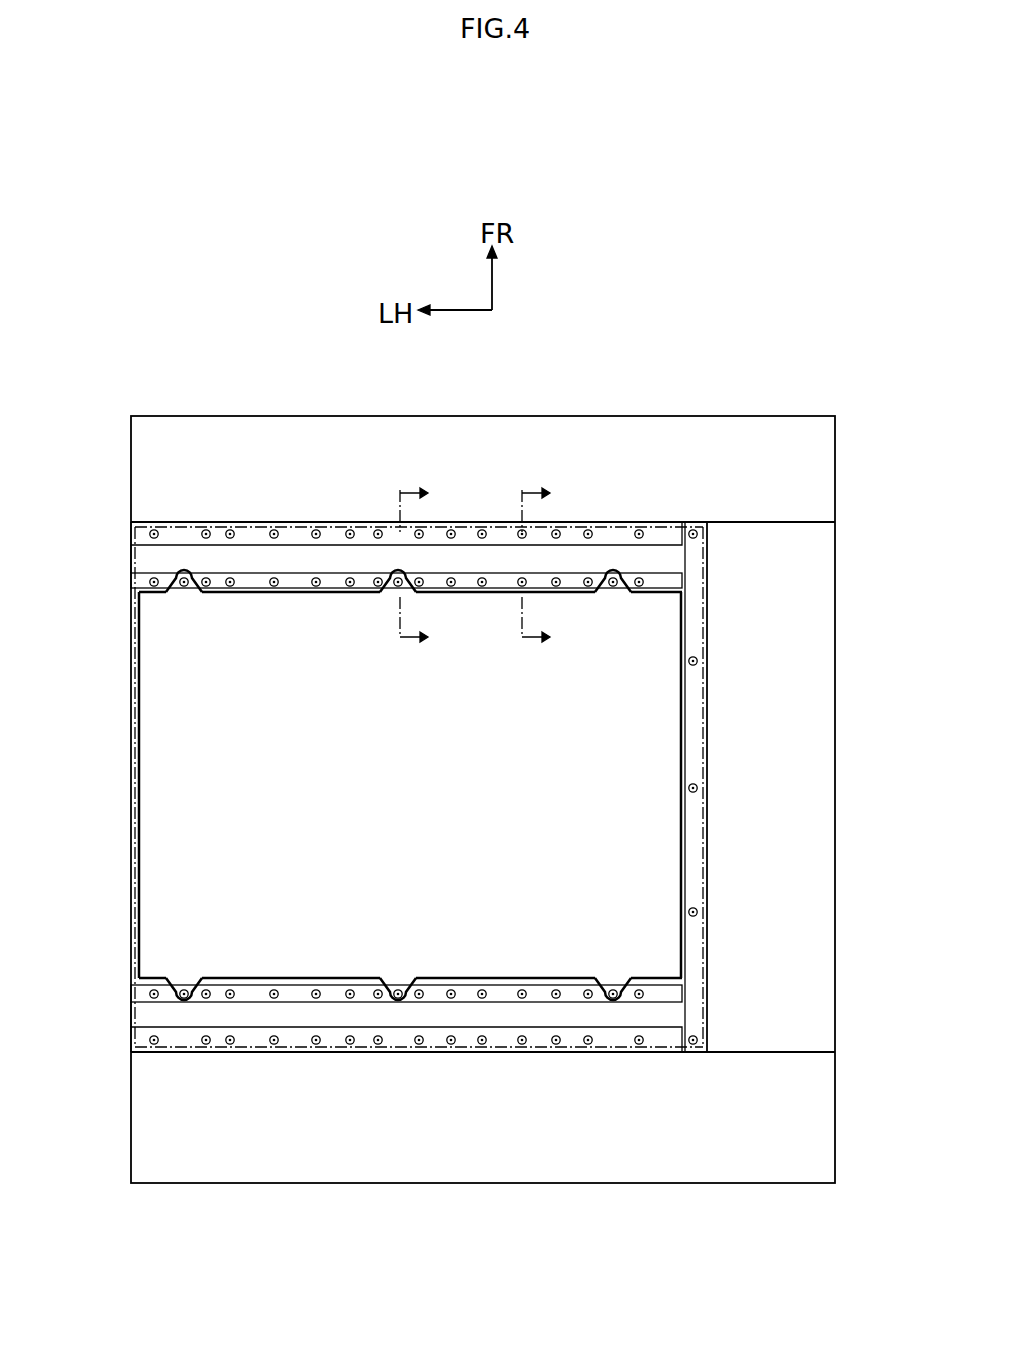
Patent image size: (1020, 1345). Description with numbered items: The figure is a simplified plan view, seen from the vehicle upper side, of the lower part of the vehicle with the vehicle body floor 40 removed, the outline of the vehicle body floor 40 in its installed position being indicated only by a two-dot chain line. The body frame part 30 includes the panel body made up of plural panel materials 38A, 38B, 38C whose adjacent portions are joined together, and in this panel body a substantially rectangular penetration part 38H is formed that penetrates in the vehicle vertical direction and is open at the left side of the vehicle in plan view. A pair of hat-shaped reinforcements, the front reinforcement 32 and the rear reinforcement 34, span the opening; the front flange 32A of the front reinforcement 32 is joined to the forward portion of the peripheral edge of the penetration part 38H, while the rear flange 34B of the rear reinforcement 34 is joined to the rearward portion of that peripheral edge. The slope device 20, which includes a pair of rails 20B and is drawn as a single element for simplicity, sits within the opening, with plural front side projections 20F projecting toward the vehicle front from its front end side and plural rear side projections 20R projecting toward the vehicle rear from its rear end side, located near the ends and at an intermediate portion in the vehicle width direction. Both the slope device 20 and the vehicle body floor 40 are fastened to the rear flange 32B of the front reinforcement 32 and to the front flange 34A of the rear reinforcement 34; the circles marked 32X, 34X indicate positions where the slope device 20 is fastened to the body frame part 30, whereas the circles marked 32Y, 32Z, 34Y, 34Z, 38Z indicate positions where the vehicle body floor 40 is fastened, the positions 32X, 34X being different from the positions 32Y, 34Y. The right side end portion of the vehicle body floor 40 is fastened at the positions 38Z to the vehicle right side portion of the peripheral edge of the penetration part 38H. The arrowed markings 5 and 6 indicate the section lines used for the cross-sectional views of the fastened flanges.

The body frame part 30 is at (813, 892).
The panel material 38A is at (706, 427).
The panel material 38B is at (836, 668).
The panel material 38C is at (652, 1170).
The penetration part 38H is at (683, 835).
The fastening positions 38Z is at (697, 536).
The vehicle body floor 40 is at (128, 800).
The slope device 20 is at (364, 789).
The rails 20B is at (140, 680).
The front side projections 20F is at (202, 574).
The rear side projections 20R is at (200, 1000).
The front reinforcement 32 is at (540, 548).
The front flange 32A is at (290, 541).
The rear flange 32B is at (362, 579).
The fastening positions 32X is at (186, 590).
The fastening positions 32Y is at (153, 592).
The fastening positions 32Z is at (154, 529).
The rear reinforcement 34 is at (502, 997).
The front flange 34A is at (293, 992).
The rear flange 34B is at (362, 1040).
The fastening positions 34X is at (186, 985).
The fastening positions 34Y is at (154, 987).
The fastening positions 34Z is at (154, 1046).
The section line 5 is at (401, 490).
The section line 6 is at (522, 490).